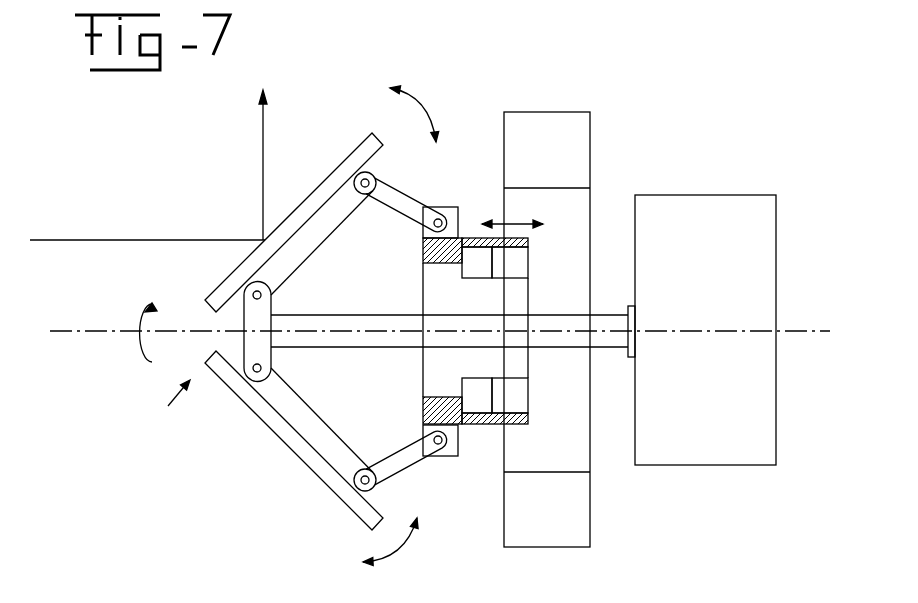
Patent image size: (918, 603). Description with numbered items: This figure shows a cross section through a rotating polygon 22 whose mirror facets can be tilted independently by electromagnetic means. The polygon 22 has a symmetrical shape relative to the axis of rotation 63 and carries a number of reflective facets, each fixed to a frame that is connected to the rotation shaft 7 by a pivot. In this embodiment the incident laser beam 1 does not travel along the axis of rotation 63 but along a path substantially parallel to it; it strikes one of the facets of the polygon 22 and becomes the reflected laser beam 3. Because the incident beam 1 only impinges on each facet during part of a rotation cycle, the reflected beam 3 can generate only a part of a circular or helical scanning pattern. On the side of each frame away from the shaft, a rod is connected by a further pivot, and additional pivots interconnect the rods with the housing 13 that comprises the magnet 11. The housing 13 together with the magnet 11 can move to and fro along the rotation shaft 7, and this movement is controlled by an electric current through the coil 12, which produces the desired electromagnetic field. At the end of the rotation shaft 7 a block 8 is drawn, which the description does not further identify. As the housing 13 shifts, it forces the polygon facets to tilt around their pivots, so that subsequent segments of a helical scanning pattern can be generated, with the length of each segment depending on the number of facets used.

The incident laser beam 1 is at (95, 240).
The reflected laser beam 3 is at (263, 143).
The rotation shaft 7 is at (573, 318).
The body / housing 8 is at (732, 466).
The magnet 11 is at (489, 412).
The coil 12 is at (559, 537).
The housing 13 is at (520, 294).
The polygon 22 is at (160, 374).
The axis of rotation 63 is at (793, 330).